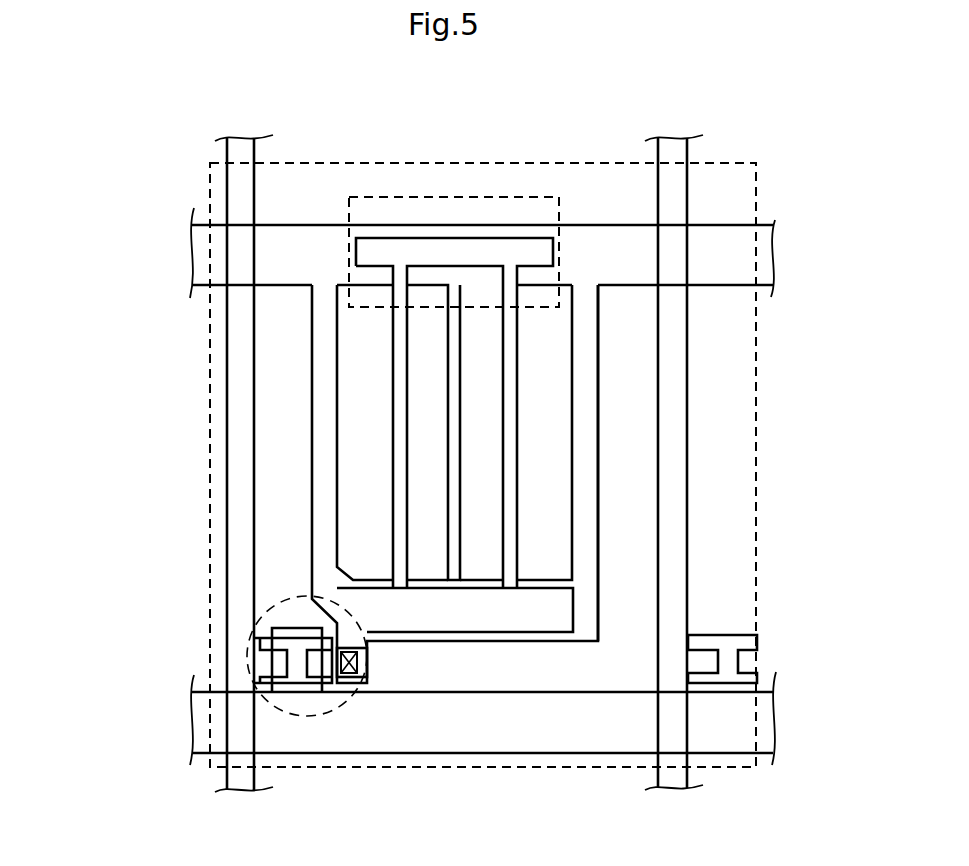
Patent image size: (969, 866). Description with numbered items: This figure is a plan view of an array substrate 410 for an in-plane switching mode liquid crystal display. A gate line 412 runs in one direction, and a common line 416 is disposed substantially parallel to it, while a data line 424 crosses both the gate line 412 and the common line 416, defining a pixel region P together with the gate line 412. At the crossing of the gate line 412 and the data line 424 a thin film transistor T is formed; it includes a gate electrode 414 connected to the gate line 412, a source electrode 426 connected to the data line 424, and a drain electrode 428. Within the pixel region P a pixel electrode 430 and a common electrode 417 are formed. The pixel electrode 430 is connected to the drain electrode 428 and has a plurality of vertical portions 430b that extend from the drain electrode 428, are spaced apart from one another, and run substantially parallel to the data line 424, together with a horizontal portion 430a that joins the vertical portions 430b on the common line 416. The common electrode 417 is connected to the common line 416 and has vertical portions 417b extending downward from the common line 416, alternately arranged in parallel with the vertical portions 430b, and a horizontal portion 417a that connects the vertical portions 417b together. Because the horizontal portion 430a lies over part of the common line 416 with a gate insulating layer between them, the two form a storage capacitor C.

The array substrate 410 is at (756, 358).
The gate line 412 is at (538, 737).
The gate electrode 414 is at (260, 642).
The common line 416 is at (742, 253).
The common electrode 417 is at (638, 463).
The horizontal portion 417a is at (588, 598).
The vertical portions 417b is at (588, 503).
The data line 424 is at (680, 427).
The source electrode 426 is at (283, 683).
The drain electrode 428 is at (345, 678).
The pixel electrode 430 is at (315, 458).
The horizontal portion 430a is at (368, 253).
The vertical portions 430b is at (397, 388).
The storage capacitor C is at (487, 197).
The pixel region P is at (735, 495).
The thin film transistor T is at (382, 707).